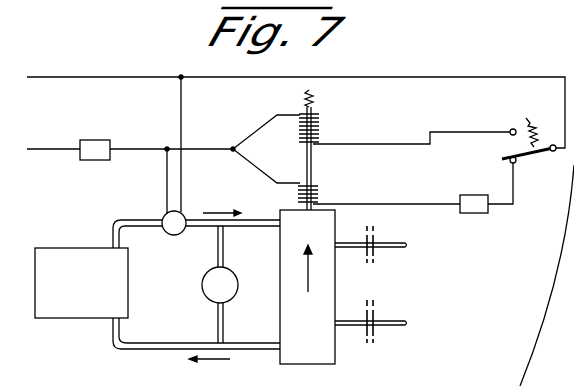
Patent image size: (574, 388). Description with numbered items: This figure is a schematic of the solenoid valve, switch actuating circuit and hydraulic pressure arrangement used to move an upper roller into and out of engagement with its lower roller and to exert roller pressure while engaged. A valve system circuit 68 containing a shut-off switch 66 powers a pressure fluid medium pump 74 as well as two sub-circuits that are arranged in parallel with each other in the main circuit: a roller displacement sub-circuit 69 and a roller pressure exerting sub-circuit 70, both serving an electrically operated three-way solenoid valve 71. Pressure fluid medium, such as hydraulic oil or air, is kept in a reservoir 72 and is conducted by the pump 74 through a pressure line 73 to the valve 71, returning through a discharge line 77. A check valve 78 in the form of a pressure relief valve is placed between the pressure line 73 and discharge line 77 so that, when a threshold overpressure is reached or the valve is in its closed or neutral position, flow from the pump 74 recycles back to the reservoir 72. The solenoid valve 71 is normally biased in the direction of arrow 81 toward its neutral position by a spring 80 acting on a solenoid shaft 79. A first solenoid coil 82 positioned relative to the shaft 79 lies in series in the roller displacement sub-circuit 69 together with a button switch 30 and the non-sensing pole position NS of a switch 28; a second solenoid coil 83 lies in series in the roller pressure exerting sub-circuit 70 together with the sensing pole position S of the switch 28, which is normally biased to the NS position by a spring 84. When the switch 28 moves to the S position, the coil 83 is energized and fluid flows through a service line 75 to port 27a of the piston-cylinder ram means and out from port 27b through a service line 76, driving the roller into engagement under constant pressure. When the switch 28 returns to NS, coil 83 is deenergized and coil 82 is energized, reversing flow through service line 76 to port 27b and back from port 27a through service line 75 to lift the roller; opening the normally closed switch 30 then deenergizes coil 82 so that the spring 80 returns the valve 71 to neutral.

The port 27a is at (398, 242).
The port 27b is at (398, 320).
The switch 28 is at (528, 156).
The button switch 30 is at (472, 213).
The shut-off switch 66 is at (99, 140).
The valve system circuit 68 is at (72, 78).
The roller displacement sub-circuit 69 is at (403, 205).
The roller pressure exerting sub-circuit 70 is at (445, 132).
The three-way solenoid valve 71 is at (335, 229).
The reservoir 72 is at (58, 313).
The pressure line 73 is at (113, 228).
The pressure fluid medium pump 74 is at (170, 236).
The service line 75 is at (347, 248).
The service line 76 is at (348, 327).
The discharge line 77 is at (115, 349).
The check valve 78 is at (203, 289).
The solenoid shaft 79 is at (312, 167).
The spring 80 is at (313, 97).
The arrow 81 is at (306, 270).
The first solenoid coil 82 is at (320, 194).
The second solenoid coil 83 is at (320, 123).
The spring 84 is at (532, 123).
The sensing pole position S is at (513, 128).
The non-sensing pole position NS is at (515, 165).